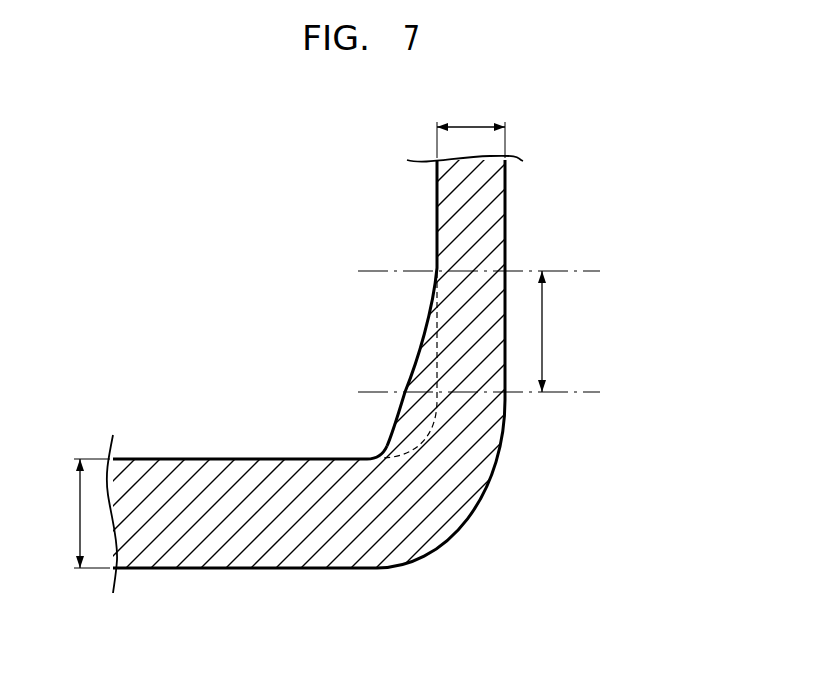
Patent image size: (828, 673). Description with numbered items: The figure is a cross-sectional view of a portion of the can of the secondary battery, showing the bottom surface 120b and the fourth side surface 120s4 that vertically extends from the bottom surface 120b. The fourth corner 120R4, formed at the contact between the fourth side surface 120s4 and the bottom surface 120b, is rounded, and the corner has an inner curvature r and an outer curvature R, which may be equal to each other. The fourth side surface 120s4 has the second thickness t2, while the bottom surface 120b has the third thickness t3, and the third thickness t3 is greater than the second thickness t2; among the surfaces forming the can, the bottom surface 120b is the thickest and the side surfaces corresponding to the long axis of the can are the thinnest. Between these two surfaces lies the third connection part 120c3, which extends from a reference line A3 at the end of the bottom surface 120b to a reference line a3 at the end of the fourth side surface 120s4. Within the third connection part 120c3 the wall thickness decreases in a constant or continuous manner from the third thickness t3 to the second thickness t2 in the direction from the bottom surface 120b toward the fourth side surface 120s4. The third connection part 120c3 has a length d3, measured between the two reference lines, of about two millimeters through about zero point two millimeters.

The fourth side surface 120s4 is at (492, 217).
The third connection part 120c3 is at (457, 332).
The bottom surface 120b is at (225, 550).
The fourth corner 120R4 is at (462, 527).
The inner curvature r is at (384, 444).
The outer curvature R is at (498, 475).
The second thickness t2 is at (471, 128).
The third thickness t3 is at (82, 513).
The reference line a3 is at (494, 272).
The reference line A3 is at (495, 393).
The length d3 is at (555, 331).